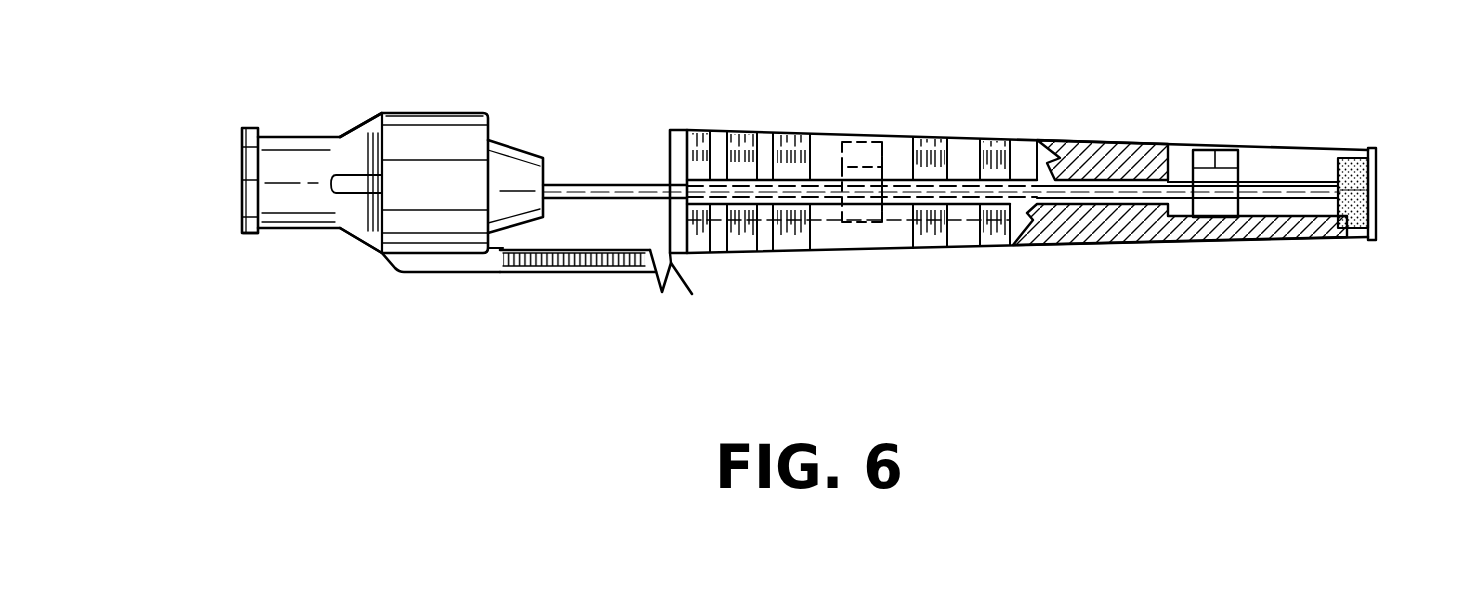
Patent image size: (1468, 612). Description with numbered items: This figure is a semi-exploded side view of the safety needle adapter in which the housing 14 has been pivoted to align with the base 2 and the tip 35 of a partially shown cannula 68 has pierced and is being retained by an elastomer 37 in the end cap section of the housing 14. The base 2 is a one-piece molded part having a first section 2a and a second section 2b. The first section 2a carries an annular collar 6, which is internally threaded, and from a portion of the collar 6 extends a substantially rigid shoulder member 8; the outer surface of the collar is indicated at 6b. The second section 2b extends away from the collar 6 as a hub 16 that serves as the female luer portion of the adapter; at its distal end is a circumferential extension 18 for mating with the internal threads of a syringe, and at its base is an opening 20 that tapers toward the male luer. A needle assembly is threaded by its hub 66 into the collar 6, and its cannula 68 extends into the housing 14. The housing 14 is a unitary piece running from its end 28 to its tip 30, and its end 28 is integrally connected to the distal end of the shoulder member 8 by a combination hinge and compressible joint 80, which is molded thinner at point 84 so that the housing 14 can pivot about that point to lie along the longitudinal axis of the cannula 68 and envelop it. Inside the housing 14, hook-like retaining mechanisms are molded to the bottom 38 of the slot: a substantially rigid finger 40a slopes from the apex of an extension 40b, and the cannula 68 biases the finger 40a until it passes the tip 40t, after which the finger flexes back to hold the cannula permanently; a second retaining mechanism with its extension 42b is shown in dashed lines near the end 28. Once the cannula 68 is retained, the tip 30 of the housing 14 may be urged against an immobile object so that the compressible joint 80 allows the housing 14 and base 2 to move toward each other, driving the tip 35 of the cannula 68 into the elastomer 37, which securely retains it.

The base 2 is at (363, 180).
The first section 2a is at (464, 272).
The second section 2b is at (336, 243).
The annular collar 6 is at (466, 111).
The hub outer surface 6b is at (411, 111).
The shoulder member 8 is at (586, 278).
The housing 14 is at (1040, 256).
The hub 16 is at (292, 136).
The circumferential extension 18 is at (250, 236).
The opening 20 is at (240, 230).
The end 28 is at (677, 130).
The tip 30 is at (1378, 233).
The tip 35 is at (1347, 191).
The elastomer 37 is at (1355, 158).
The bottom 38 is at (1020, 137).
The finger 40a is at (843, 150).
The extension 40b is at (1240, 206).
The tip 40t is at (1216, 166).
The extension 42b is at (890, 176).
The hub 66 is at (527, 150).
The cannula 68 is at (1187, 203).
The combination hinge and compressible joint 80 is at (697, 300).
The point 84 is at (670, 250).